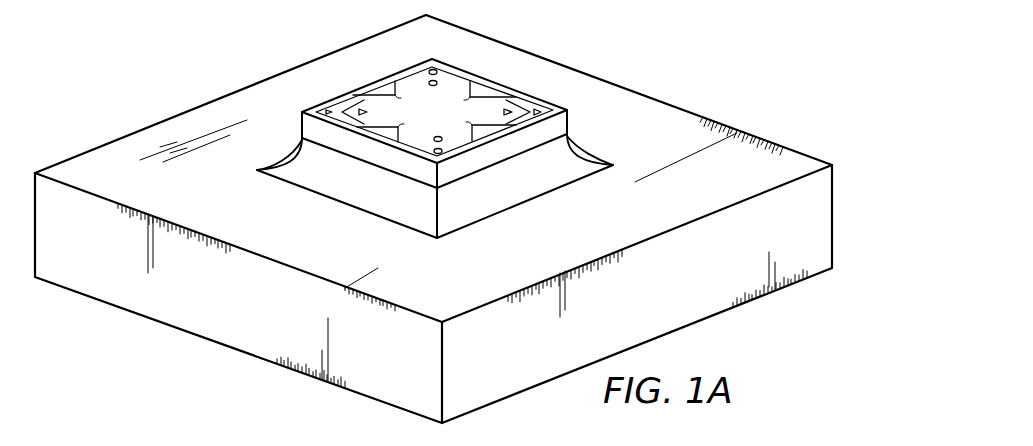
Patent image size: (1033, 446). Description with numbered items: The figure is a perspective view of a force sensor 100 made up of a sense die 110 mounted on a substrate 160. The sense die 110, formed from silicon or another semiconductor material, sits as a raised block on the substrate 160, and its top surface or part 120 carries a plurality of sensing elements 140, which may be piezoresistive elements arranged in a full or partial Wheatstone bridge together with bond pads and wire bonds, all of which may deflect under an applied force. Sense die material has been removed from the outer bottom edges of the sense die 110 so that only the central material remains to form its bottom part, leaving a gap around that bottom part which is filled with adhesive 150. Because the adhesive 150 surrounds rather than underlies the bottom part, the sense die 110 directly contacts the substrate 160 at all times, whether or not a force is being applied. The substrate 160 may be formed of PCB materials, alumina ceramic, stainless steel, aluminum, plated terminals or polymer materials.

The force sensor 100 is at (433, 219).
The sense die 110 is at (423, 90).
The top surface or part of the sense die 120 is at (551, 128).
The sensing elements 140 is at (347, 111).
The adhesive 150 is at (560, 165).
The substrate 160 is at (707, 289).